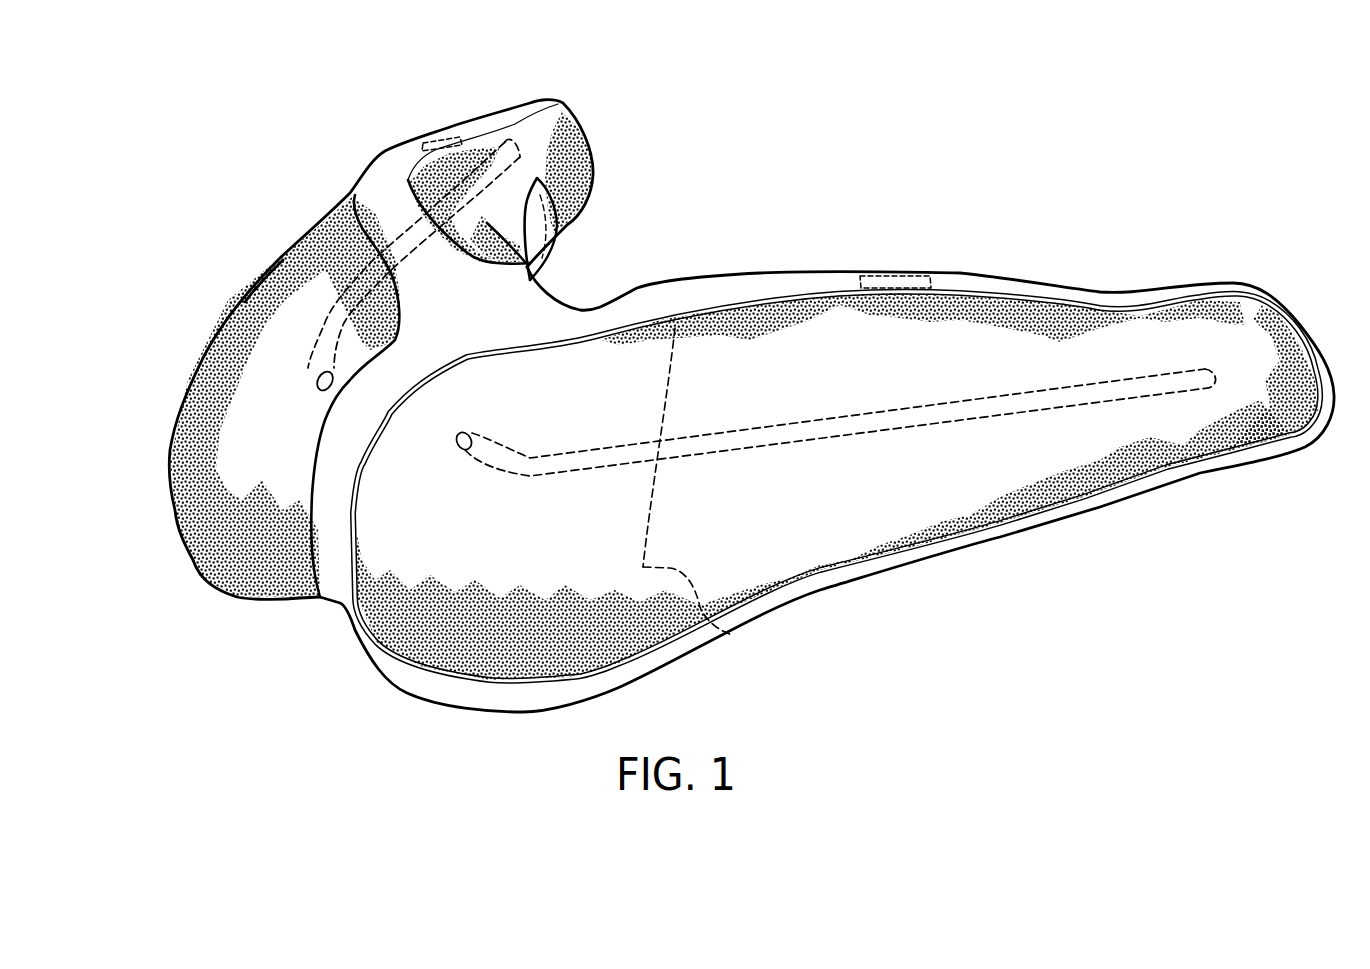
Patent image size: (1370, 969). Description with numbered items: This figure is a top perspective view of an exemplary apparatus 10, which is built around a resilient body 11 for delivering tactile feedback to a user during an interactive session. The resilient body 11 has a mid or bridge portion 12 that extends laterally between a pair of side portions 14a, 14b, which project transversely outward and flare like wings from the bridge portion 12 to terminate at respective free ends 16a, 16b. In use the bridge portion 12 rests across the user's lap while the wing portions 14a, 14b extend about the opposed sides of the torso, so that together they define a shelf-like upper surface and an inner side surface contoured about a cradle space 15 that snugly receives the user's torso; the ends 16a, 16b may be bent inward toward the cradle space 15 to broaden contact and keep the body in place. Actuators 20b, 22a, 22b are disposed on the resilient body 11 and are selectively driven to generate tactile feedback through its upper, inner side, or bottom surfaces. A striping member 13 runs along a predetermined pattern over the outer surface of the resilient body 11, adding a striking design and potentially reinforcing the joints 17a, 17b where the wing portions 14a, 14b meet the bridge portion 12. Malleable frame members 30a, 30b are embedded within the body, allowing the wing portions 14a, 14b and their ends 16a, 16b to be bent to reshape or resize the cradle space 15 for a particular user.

The apparatus 10 is at (1040, 118).
The resilient body 11 is at (230, 304).
The bridge portion 12 is at (602, 360).
The striping member 13 is at (343, 439).
The side portion 14a is at (1000, 317).
The side portion 14b is at (323, 240).
The cradle space 15 is at (787, 193).
The free end 16a is at (1263, 313).
The free end 16b is at (580, 142).
The joint 17a is at (720, 627).
The joint 17b is at (283, 260).
The actuator 20b is at (580, 210).
The actuator 22a is at (907, 273).
The actuator 22b is at (433, 145).
The malleable frame member 30a is at (840, 437).
The malleable frame member 30b is at (317, 337).